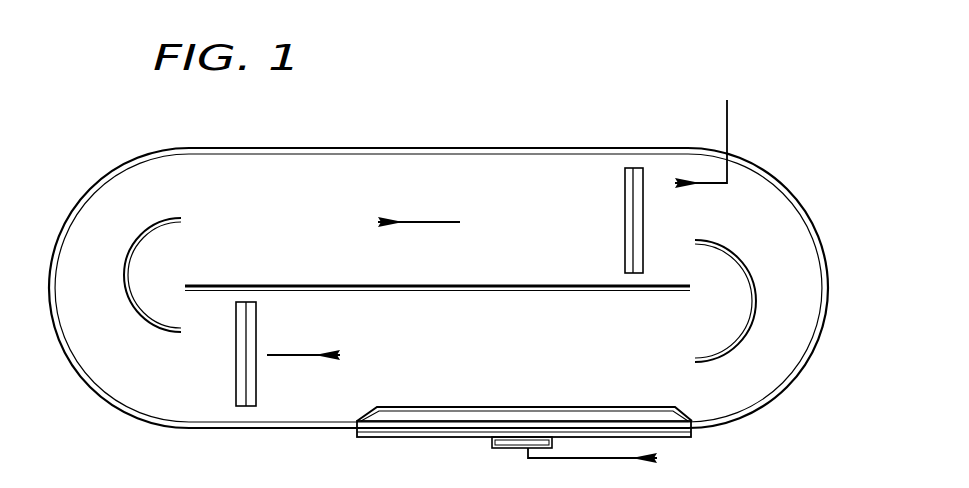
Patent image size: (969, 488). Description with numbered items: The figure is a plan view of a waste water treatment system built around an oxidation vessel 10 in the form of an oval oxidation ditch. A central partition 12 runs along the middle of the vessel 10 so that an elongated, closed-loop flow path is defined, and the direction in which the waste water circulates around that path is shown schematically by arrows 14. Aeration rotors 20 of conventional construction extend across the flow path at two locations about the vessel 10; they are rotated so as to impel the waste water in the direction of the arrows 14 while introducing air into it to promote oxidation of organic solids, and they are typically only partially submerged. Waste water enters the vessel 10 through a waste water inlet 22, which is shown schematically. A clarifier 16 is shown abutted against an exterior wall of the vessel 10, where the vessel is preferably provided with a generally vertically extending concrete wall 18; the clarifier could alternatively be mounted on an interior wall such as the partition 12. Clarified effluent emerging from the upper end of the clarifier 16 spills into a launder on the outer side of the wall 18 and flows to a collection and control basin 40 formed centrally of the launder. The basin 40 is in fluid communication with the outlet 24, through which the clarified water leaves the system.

The oxidation vessel 10 is at (475, 136).
The central partition 12 is at (496, 285).
The arrows 14 is at (433, 222).
The clarifier 16 is at (569, 396).
The concrete wall 18 is at (357, 424).
The aeration rotors 20 is at (625, 197).
The waste water inlet 22 is at (728, 124).
The outlet 24 is at (613, 462).
The collection and control basin 40 is at (512, 443).